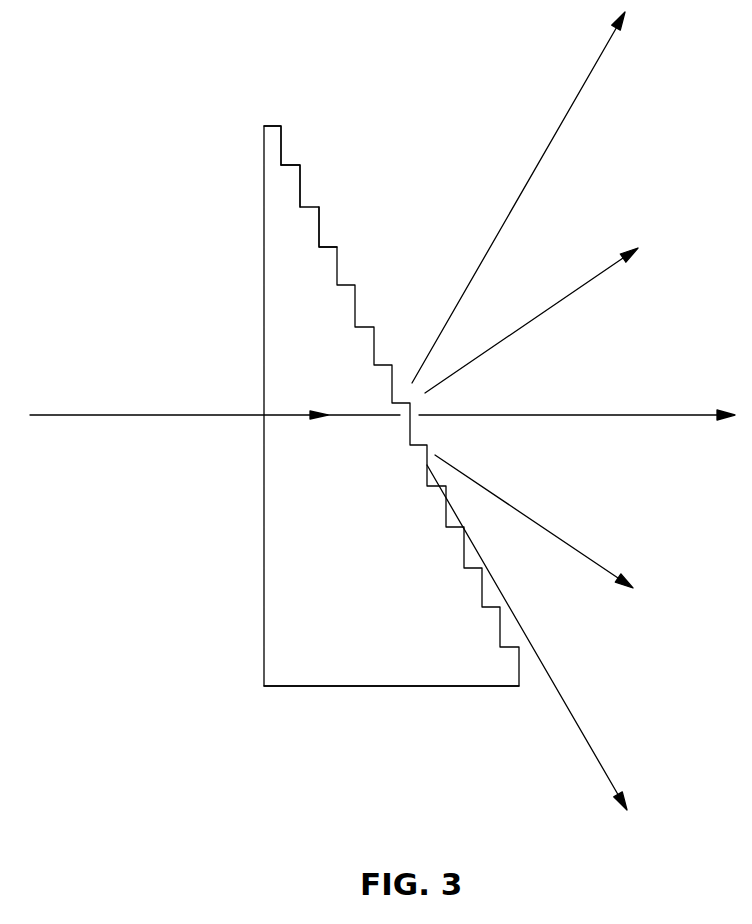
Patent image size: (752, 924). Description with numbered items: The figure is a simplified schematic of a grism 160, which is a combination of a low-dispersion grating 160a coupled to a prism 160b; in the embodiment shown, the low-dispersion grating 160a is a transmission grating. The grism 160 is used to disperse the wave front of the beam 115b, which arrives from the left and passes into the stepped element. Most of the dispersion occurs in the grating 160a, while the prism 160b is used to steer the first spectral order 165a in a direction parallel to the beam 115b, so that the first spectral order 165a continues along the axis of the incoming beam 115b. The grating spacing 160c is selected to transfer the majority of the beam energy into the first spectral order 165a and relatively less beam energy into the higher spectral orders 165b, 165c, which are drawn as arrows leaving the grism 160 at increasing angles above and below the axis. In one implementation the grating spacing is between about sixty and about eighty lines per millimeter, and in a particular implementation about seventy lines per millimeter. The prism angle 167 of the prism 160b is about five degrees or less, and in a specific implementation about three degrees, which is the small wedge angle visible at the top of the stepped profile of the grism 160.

The beam 115b is at (128, 414).
The grism 160 is at (264, 545).
The low-dispersion grating 160a is at (308, 163).
The prism 160b is at (327, 680).
The grating spacing 160c is at (338, 245).
The prism angle 167 is at (270, 155).
The first spectral order 165a is at (633, 415).
The higher spectral order 165b is at (545, 310).
The higher spectral order 165c is at (547, 147).